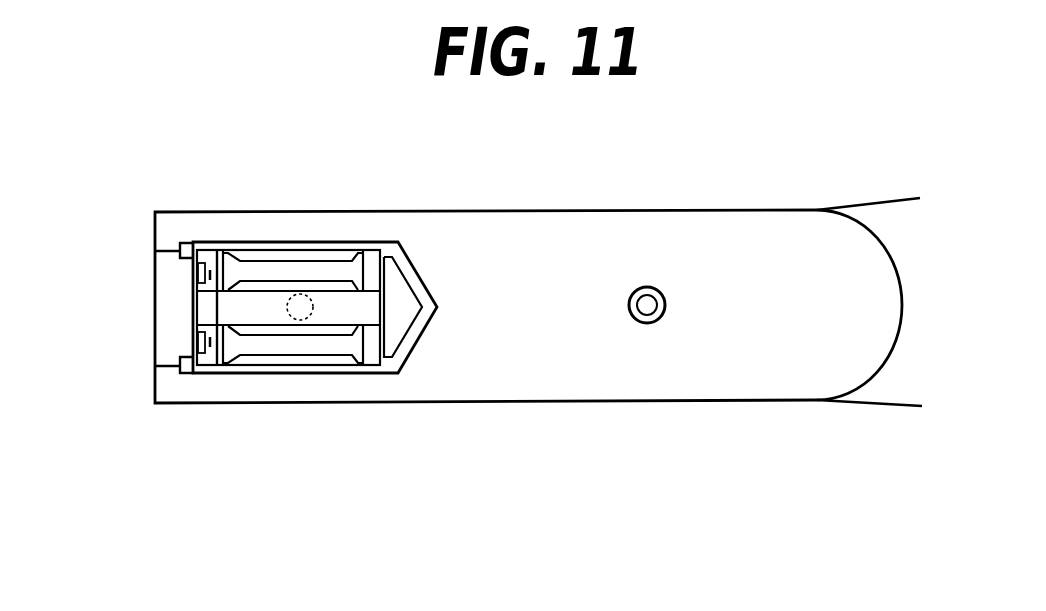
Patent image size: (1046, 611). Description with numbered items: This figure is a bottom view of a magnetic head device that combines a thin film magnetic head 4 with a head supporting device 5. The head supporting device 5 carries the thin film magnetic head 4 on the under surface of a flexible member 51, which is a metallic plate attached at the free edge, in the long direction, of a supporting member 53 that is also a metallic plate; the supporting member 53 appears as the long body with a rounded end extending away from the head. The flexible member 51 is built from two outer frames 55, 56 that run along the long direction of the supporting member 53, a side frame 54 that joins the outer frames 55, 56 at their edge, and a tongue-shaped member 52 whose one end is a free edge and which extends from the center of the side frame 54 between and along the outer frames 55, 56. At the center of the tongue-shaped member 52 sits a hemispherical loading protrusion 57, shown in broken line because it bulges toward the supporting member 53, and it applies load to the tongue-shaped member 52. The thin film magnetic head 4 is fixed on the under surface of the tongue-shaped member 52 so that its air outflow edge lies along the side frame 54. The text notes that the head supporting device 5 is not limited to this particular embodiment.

The thin film magnetic head 4 is at (298, 415).
The head supporting device 5 is at (880, 427).
The flexible member 51 is at (157, 375).
The tongue-shaped member 52 is at (398, 315).
The supporting member 53 is at (882, 217).
The side frame 54 is at (177, 318).
The outer frame 55 is at (223, 230).
The outer frame 56 is at (367, 387).
The hemispherical loading protrusion 57 is at (299, 296).